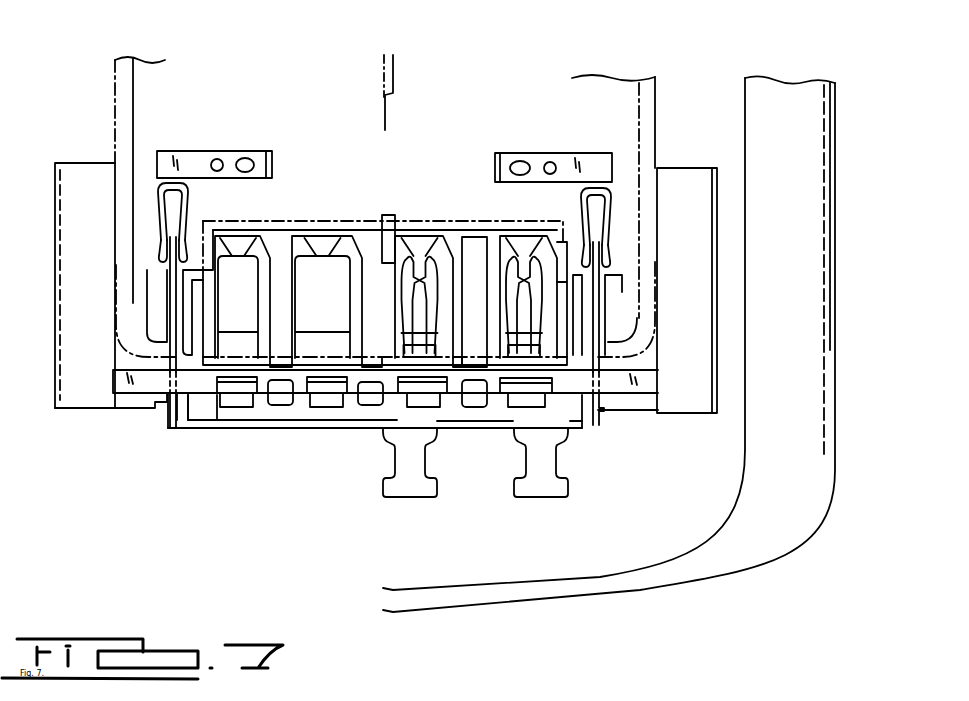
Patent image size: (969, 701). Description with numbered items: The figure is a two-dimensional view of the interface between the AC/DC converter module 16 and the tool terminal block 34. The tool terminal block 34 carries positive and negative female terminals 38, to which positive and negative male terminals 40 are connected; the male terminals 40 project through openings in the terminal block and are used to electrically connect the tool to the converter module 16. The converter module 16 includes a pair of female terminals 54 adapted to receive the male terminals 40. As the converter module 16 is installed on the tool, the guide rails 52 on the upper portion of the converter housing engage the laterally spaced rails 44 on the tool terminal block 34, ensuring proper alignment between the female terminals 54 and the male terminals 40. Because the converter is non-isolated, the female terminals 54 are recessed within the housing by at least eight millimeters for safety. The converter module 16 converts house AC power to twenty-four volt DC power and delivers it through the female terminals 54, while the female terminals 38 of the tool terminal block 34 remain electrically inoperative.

The AC/DC converter module 16 is at (838, 124).
The tool terminal block 34 is at (277, 413).
The female terminals 38 is at (503, 283).
The male terminals 40 is at (170, 303).
The rails 44 is at (82, 395).
The guide rails 52 is at (118, 126).
The female terminals 54 is at (157, 203).